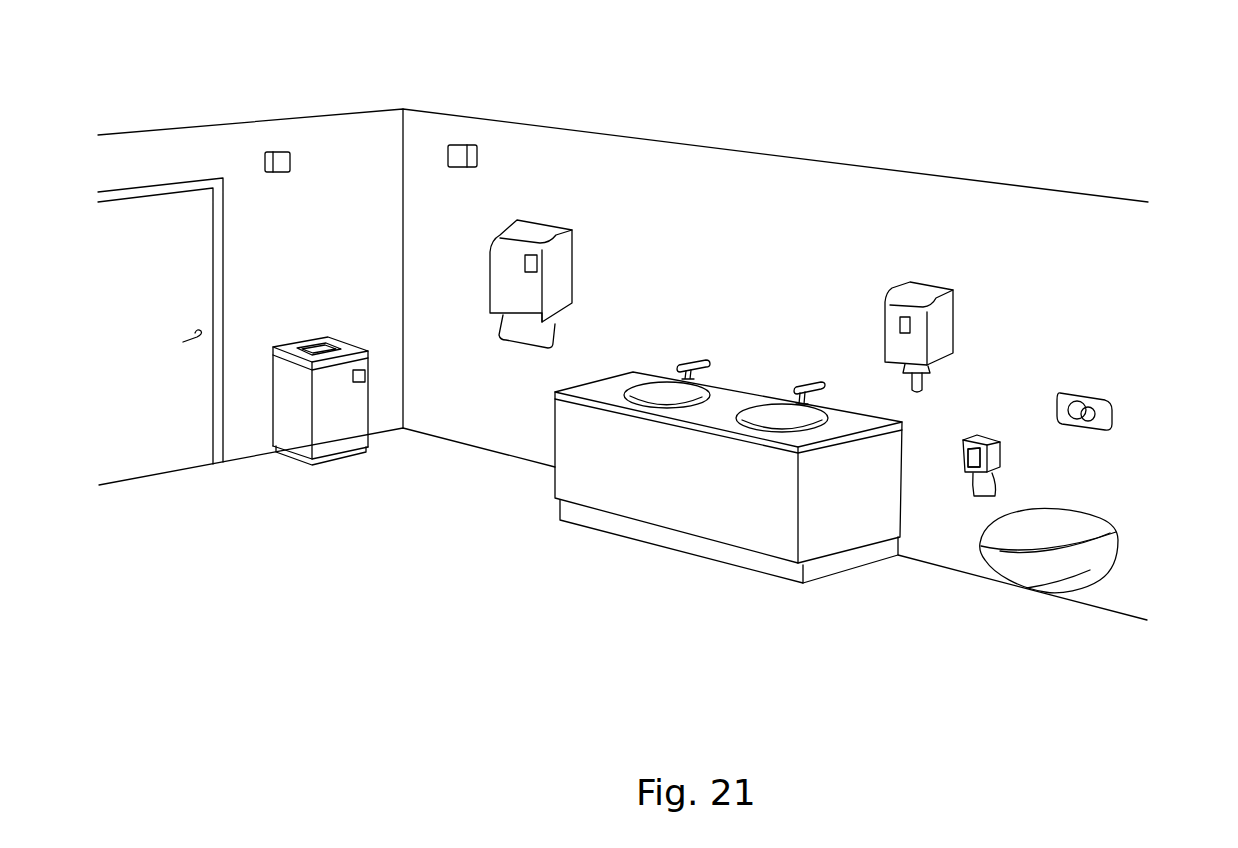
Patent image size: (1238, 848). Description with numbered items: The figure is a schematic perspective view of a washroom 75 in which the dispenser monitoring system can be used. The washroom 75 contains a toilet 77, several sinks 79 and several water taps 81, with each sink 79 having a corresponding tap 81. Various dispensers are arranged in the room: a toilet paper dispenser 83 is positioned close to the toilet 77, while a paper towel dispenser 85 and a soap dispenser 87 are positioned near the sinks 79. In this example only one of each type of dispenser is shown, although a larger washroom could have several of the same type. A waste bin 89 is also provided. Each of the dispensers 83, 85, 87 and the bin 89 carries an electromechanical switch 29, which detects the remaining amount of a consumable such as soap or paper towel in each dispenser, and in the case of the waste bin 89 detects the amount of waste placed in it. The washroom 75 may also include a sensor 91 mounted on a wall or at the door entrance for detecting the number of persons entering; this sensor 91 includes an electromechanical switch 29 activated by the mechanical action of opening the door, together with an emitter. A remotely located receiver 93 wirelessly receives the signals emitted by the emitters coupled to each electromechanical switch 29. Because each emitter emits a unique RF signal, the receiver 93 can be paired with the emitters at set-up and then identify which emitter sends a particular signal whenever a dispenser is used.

The washroom 75 is at (792, 128).
The toilet 77 is at (1102, 558).
The sink 79 is at (658, 398).
The water tap 81 is at (693, 358).
The toilet paper dispenser 83 is at (997, 458).
The paper towel dispenser 85 is at (500, 275).
The soap dispenser 87 is at (947, 323).
The waste bin 89 is at (287, 412).
The sensor 91 is at (281, 155).
The receiver 93 is at (459, 148).
The electromechanical switch 29 is at (367, 373).